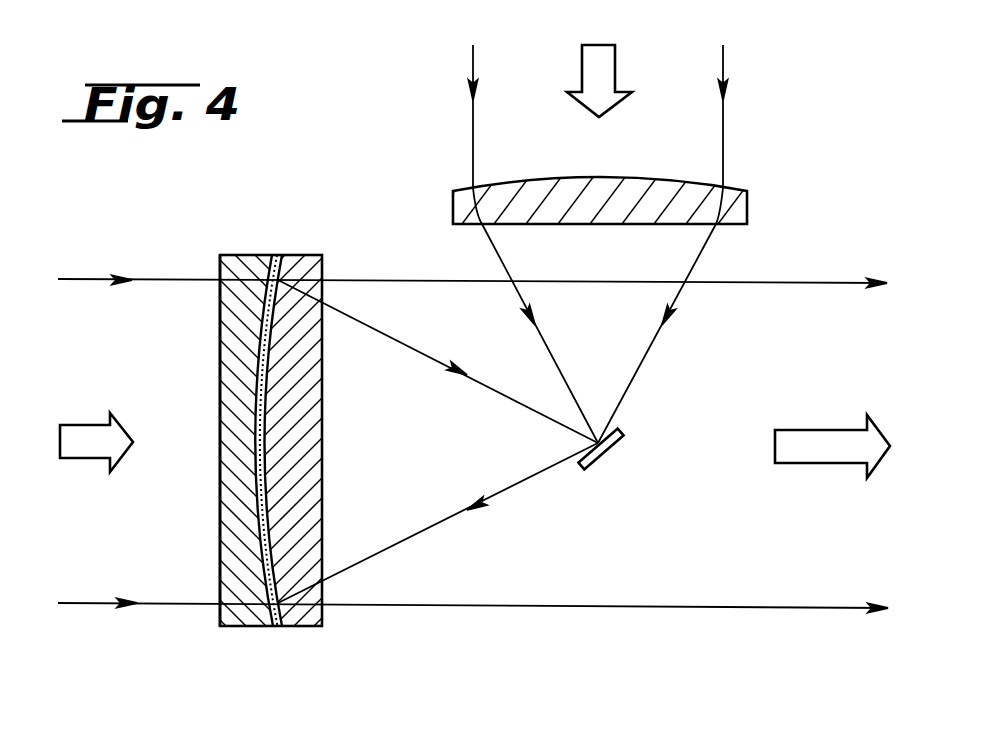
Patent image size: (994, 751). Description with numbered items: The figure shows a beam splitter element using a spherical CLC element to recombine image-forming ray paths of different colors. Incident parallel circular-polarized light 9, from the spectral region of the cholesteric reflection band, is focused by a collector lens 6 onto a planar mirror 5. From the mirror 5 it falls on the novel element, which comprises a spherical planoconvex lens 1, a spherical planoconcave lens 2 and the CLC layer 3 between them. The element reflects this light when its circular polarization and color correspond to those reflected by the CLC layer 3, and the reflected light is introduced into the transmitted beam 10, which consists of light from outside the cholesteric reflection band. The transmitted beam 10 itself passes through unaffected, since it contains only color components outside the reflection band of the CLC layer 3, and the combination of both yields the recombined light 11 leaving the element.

The planoconvex lens 1 is at (302, 415).
The planoconcave lens 2 is at (222, 352).
The CLC layer 3 is at (256, 510).
The planar mirror 5 is at (612, 444).
The collector lens 6 is at (735, 212).
The circular-polarized light 9 is at (605, 81).
The transmitted beam 10 is at (96, 431).
The recombined light 11 is at (832, 436).